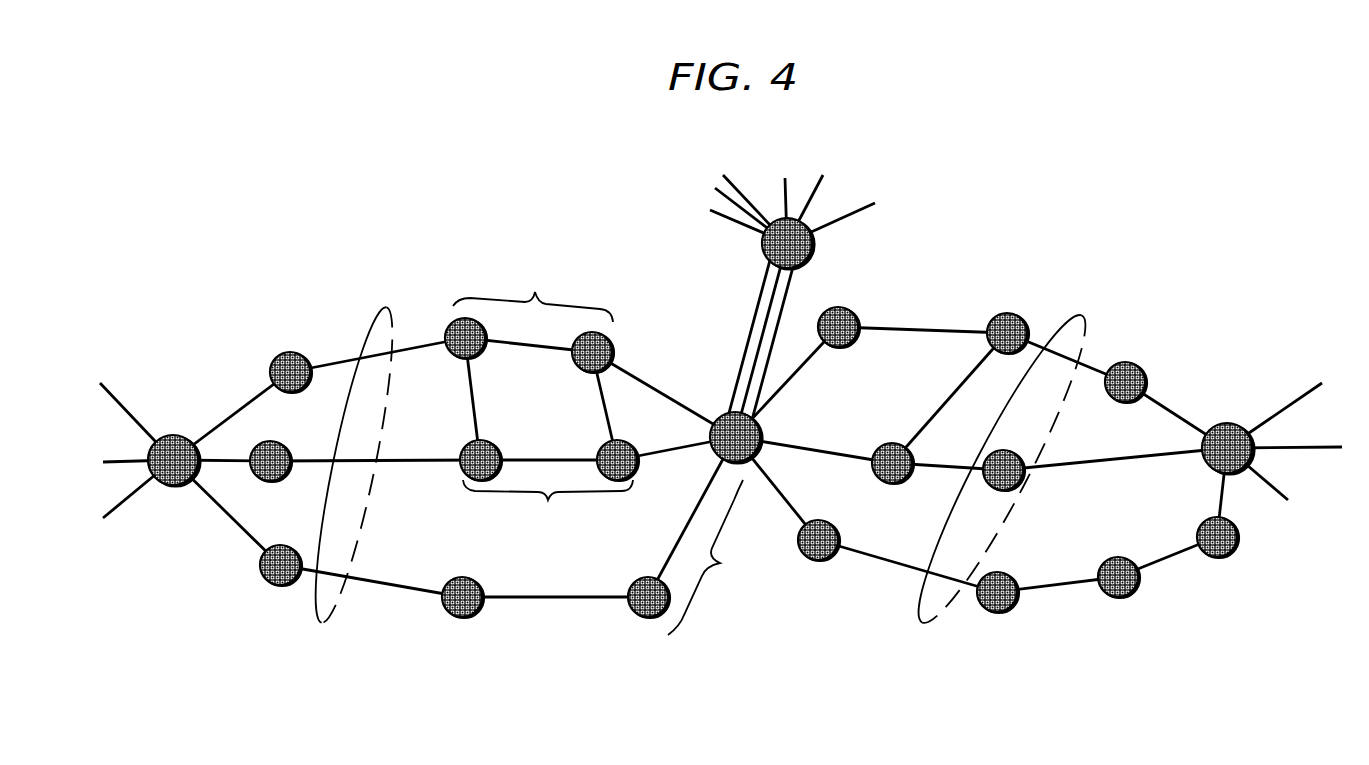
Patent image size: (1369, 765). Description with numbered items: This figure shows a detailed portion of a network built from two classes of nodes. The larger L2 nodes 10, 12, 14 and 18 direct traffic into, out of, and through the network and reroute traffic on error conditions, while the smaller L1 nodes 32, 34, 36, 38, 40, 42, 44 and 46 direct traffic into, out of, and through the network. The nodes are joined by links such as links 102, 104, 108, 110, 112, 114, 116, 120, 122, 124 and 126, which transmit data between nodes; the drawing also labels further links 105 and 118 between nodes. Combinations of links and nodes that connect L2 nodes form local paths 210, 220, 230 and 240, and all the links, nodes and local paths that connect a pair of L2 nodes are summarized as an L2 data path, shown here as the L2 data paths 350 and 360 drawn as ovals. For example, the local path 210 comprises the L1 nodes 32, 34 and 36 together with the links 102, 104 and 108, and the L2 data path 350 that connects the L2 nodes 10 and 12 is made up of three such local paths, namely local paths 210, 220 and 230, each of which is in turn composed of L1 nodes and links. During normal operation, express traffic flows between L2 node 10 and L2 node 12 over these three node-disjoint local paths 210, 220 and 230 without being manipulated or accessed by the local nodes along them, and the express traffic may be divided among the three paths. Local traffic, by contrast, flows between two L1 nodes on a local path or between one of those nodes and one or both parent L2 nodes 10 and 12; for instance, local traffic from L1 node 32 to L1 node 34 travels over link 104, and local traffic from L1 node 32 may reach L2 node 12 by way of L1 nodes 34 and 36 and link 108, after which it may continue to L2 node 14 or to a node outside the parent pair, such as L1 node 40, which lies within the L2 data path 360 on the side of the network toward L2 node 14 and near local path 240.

The L2 node 10 is at (173, 435).
The L2 node 12 is at (761, 436).
The L2 node 14 is at (1226, 422).
The L2 node 18 is at (813, 243).
The L1 node 32 is at (280, 587).
The L1 node 34 is at (460, 619).
The L1 node 36 is at (636, 612).
The L1 node 38 is at (602, 446).
The L1 node 40 is at (997, 614).
The L1 node 42 is at (613, 352).
The L1 node 44 is at (450, 326).
The L1 node 46 is at (290, 352).
The link 102 is at (222, 512).
The link 104 is at (376, 583).
The link 105 is at (554, 600).
The link 108 is at (690, 521).
The link 110 is at (656, 390).
The link 112 is at (498, 343).
The link 114 is at (408, 350).
The link 116 is at (234, 410).
The link 118 is at (600, 388).
The link 120 is at (677, 450).
The link 122 is at (518, 458).
The link 124 is at (397, 464).
The link 126 is at (240, 464).
The local path 210 is at (715, 557).
The local path 220 is at (548, 505).
The local path 230 is at (533, 293).
The local path 240 is at (864, 554).
The L2 data path 350 is at (320, 628).
The L2 data path 360 is at (924, 628).